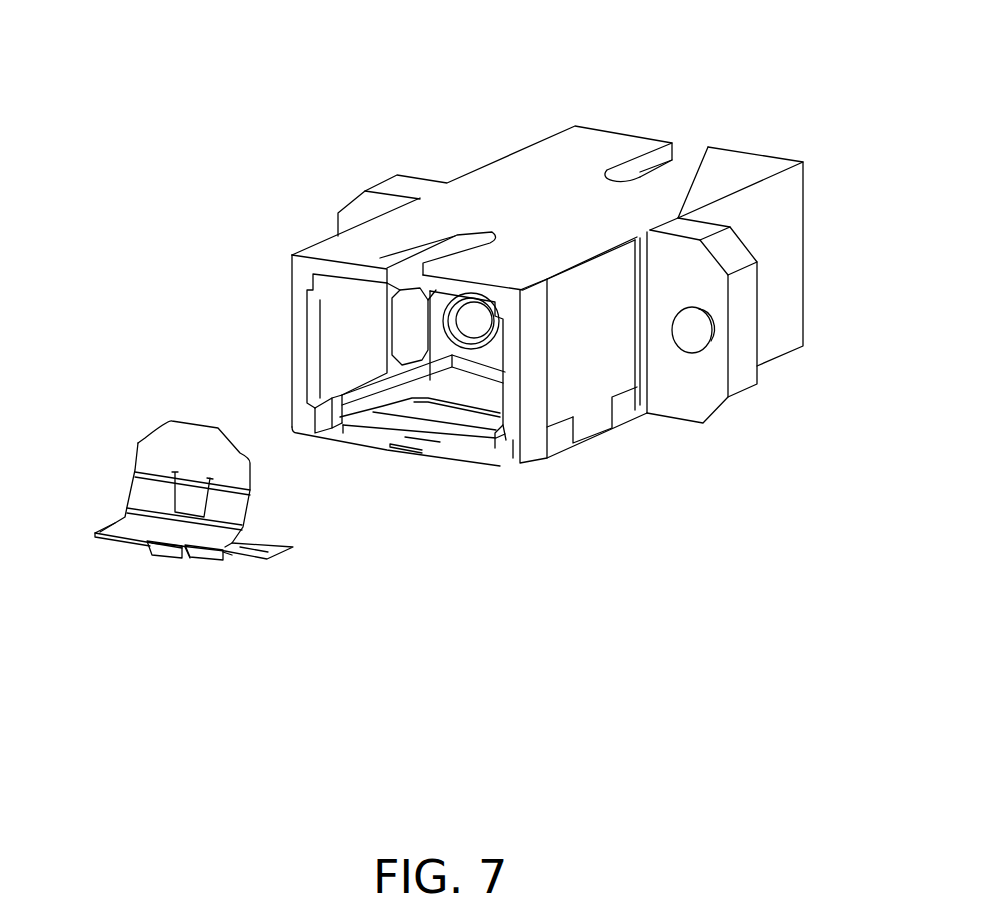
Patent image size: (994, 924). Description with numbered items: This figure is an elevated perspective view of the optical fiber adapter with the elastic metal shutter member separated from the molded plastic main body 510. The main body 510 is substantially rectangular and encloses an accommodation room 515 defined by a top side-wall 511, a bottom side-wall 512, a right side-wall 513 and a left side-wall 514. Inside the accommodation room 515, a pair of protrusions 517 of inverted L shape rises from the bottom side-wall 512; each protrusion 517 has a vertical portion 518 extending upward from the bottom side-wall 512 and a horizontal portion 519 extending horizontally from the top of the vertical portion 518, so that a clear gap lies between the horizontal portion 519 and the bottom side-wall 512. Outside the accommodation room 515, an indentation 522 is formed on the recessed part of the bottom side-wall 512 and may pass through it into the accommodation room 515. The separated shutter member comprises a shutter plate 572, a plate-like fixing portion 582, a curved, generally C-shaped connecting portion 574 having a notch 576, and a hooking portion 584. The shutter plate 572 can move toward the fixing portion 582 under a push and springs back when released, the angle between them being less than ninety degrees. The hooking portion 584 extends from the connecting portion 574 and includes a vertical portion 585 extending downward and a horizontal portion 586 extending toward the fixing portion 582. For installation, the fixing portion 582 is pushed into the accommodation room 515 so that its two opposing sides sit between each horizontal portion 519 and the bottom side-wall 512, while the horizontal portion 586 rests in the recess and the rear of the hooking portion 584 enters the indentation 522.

The main body 510 is at (785, 110).
The top side-wall 511 is at (515, 182).
The bottom side-wall 512 is at (360, 443).
The right side-wall 513 is at (560, 450).
The left side-wall 514 is at (297, 356).
The accommodation room 515 is at (469, 385).
The protrusions 517 is at (308, 422).
The vertical portion 518 is at (312, 432).
The horizontal portion 519 is at (333, 429).
The indentation 522 is at (428, 443).
The shutter plate 572 is at (150, 447).
The connecting portion 574 is at (205, 555).
The notch 576 is at (226, 556).
The fixing portion 582 is at (268, 548).
The hooking portion 584 is at (163, 562).
The vertical portion 585 is at (152, 552).
The horizontal portion 586 is at (190, 562).